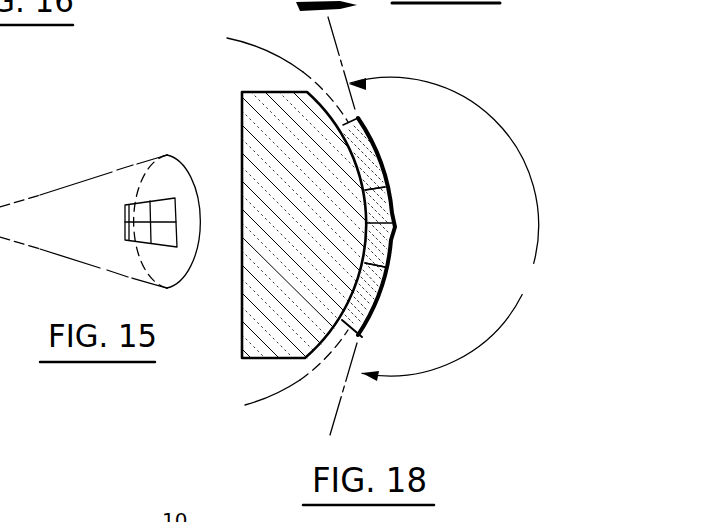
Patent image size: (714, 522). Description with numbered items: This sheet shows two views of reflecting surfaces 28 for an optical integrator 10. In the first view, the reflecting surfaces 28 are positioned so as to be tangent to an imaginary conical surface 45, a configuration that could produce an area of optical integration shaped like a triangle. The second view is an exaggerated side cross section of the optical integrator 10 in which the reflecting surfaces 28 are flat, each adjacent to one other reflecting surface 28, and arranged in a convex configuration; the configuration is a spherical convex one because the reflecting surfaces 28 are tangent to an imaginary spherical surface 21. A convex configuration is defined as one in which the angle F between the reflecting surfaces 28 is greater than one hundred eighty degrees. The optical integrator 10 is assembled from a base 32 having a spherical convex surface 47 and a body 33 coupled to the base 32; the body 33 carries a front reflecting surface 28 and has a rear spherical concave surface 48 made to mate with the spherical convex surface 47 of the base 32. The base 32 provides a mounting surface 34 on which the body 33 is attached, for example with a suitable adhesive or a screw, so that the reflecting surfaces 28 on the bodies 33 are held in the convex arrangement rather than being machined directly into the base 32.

In FIG. 18, the optical integrator 10 is at (207, 92).
In FIG. 18, the imaginary spherical surface 21 is at (268, 43).
In FIG. 15, the reflecting surfaces 28 is at (137, 233).
In FIG. 18, the reflecting surfaces 28 is at (379, 197).
In FIG. 18, the base 32 is at (258, 334).
In FIG. 18, the body 33 is at (375, 340).
In FIG. 18, the mounting surface 34 is at (317, 97).
In FIG. 15, the imaginary conical surface 45 is at (67, 183).
In FIG. 18, the spherical convex surface 47 is at (382, 188).
In FIG. 18, the rear spherical concave surface 48 is at (380, 270).
In FIG. 18, the angle between the reflecting surfaces F is at (444, 229).